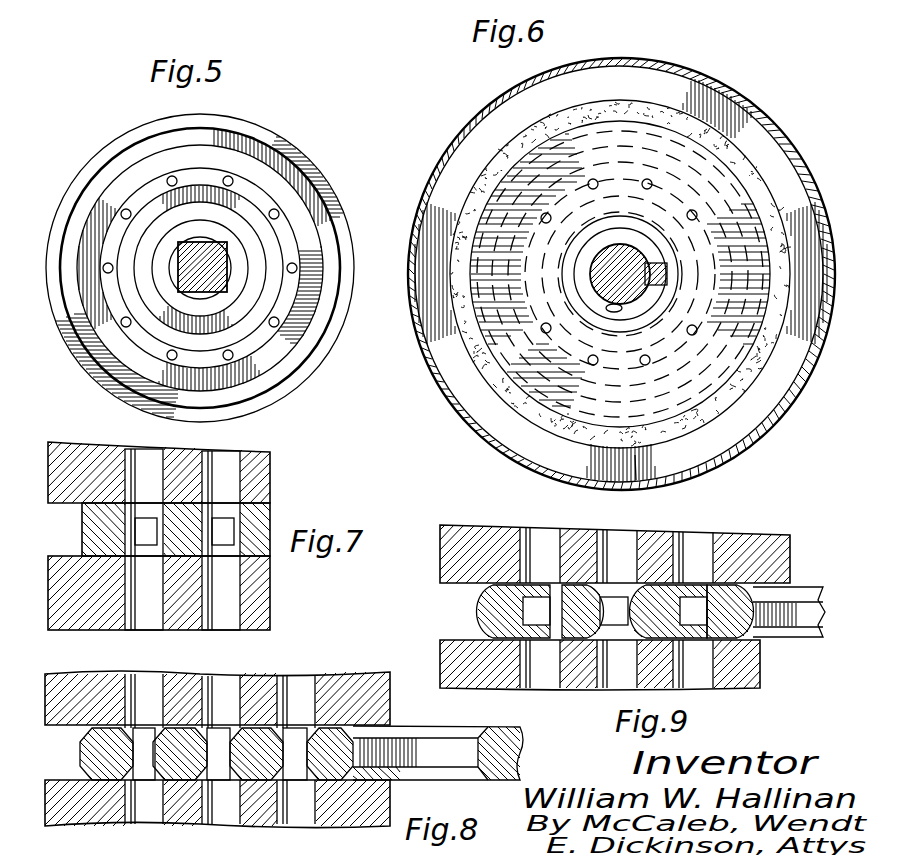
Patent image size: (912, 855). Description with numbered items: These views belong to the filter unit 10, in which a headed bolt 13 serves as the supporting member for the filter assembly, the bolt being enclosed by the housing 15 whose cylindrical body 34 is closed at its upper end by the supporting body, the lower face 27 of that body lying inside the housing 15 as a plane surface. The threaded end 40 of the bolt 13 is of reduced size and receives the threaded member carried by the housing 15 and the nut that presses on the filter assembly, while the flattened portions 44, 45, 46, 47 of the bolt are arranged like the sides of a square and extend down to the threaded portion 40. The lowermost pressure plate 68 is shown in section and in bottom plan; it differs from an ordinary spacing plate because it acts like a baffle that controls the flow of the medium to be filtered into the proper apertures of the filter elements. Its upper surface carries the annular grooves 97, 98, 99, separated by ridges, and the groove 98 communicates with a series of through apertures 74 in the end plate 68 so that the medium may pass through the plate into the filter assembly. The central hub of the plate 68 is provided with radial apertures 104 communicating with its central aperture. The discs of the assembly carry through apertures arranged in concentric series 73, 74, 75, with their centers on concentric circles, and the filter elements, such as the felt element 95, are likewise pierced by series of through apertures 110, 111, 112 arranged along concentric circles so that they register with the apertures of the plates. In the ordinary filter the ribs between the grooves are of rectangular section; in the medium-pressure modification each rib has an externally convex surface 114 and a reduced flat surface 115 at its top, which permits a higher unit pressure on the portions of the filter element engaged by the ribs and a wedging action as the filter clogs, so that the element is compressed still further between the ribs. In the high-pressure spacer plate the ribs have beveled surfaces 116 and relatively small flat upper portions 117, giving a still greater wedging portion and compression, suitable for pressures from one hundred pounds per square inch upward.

In FIG. 6, the filter unit 10 is at (760, 446).
In FIG. 5, the headed bolt 13 is at (230, 260).
In FIG. 6, the headed bolt 13 is at (596, 258).
In FIG. 6, the housing 15 is at (690, 61).
In FIG. 6, the lower face of the body 27 is at (798, 345).
In FIG. 6, the cylindrical body of the housing 34 is at (792, 140).
In FIG. 6, the threaded end of the bolt 40 is at (642, 302).
In FIG. 5, the flattened portion 44 is at (200, 297).
In FIG. 5, the flattened portion 45 is at (133, 217).
In FIG. 5, the flattened portion 46 is at (200, 240).
In FIG. 5, the flattened portion 47 is at (233, 277).
In FIG. 5, the lowermost pressure plate 68 is at (324, 362).
In FIG. 6, the lowermost pressure plate 68 is at (772, 365).
In FIG. 7, the series of through apertures 73 is at (135, 527).
In FIG. 8, the series of through apertures 73 is at (144, 749).
In FIG. 9, the series of through apertures 73 is at (540, 608).
In FIG. 5, the series of through apertures 74 is at (121, 216).
In FIG. 6, the series of through apertures 74 is at (543, 222).
In FIG. 7, the series of through apertures 74 is at (222, 527).
In FIG. 8, the series of through apertures 74 is at (221, 750).
In FIG. 9, the series of through apertures 74 is at (617, 609).
In FIG. 8, the series of through apertures 75 is at (296, 750).
In FIG. 9, the series of through apertures 75 is at (693, 610).
In FIG. 6, the filter element 95 is at (728, 372).
In FIG. 5, the annular groove 97 is at (77, 227).
In FIG. 6, the annular groove 97 is at (484, 436).
In FIG. 5, the annular groove 98 is at (260, 243).
In FIG. 6, the annular groove 98 is at (640, 486).
In FIG. 6, the annular groove 99 is at (576, 223).
In FIG. 6, the radial apertures 104 is at (680, 263).
In FIG. 7, the series of through apertures 110 is at (133, 447).
In FIG. 8, the series of through apertures 110 is at (232, 663).
In FIG. 9, the series of through apertures 110 is at (528, 684).
In FIG. 7, the series of through apertures 111 is at (205, 641).
In FIG. 8, the series of through apertures 111 is at (298, 662).
In FIG. 9, the series of through apertures 111 is at (610, 684).
In FIG. 7, the series of through apertures 112 is at (230, 632).
In FIG. 8, the series of through apertures 112 is at (258, 824).
In FIG. 9, the series of through apertures 112 is at (700, 686).
In FIG. 9, the externally convex surface 114 is at (492, 545).
In FIG. 9, the flat surface 115 is at (542, 545).
In FIG. 8, the beveled surface 116 is at (88, 690).
In FIG. 8, the flat upper portion 117 is at (138, 700).